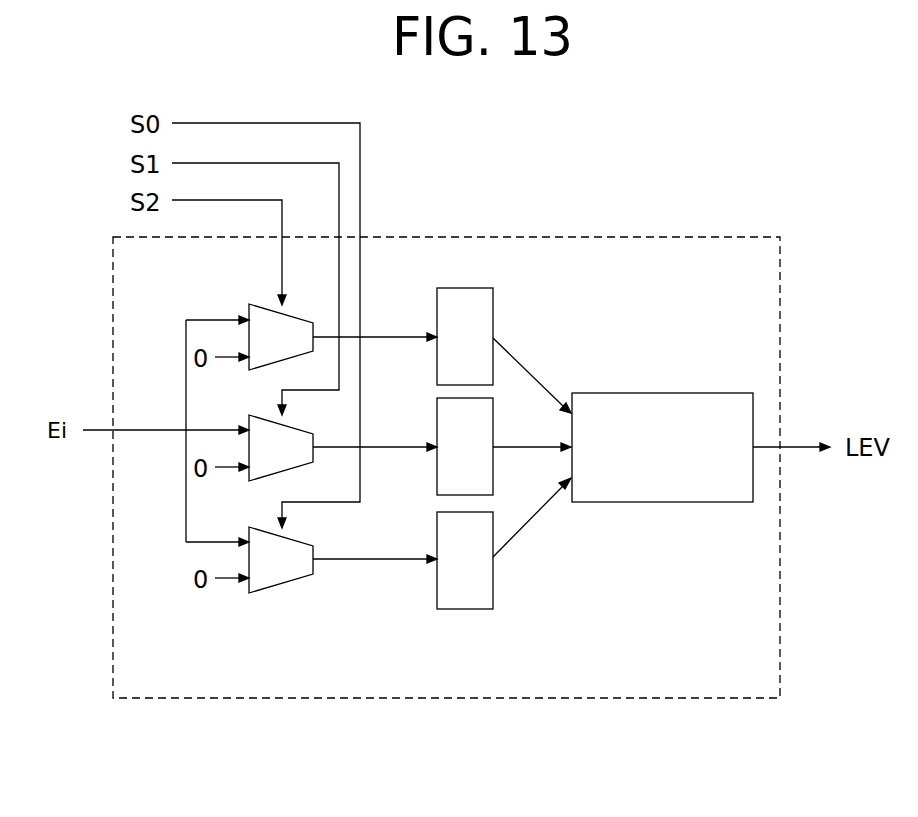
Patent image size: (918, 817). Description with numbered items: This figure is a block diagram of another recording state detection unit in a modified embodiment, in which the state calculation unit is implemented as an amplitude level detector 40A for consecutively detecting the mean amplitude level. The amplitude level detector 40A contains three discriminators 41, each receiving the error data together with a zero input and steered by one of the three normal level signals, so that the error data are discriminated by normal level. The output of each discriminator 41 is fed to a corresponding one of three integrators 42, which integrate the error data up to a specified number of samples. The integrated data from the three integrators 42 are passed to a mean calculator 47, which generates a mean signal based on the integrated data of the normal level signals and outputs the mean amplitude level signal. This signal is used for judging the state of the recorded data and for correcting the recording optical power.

The discriminator 41 is at (248, 304).
The integrator 42 is at (437, 305).
The mean calculator 47 is at (725, 392).
The amplitude level detector 40A is at (703, 236).